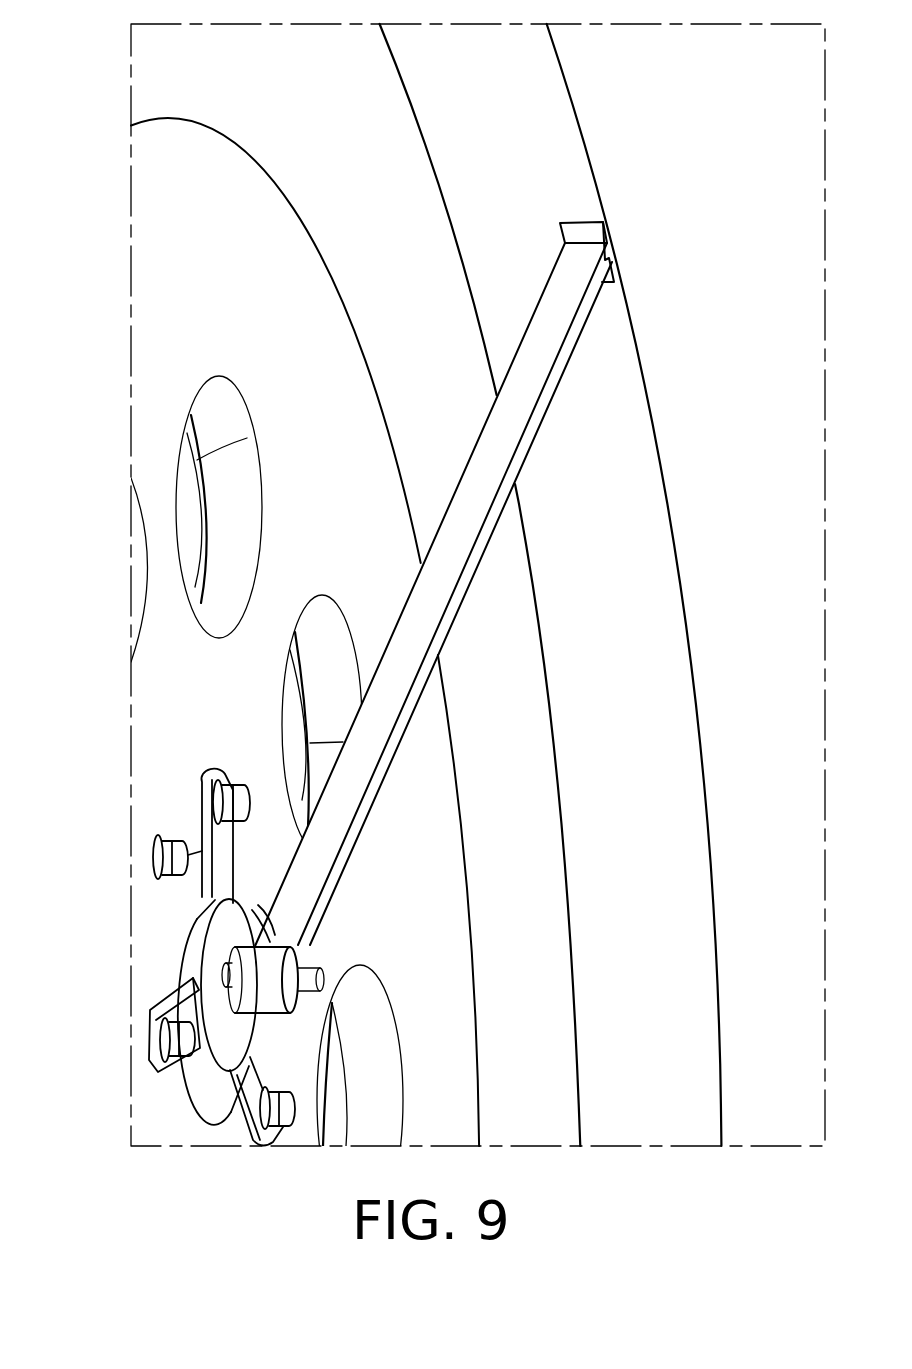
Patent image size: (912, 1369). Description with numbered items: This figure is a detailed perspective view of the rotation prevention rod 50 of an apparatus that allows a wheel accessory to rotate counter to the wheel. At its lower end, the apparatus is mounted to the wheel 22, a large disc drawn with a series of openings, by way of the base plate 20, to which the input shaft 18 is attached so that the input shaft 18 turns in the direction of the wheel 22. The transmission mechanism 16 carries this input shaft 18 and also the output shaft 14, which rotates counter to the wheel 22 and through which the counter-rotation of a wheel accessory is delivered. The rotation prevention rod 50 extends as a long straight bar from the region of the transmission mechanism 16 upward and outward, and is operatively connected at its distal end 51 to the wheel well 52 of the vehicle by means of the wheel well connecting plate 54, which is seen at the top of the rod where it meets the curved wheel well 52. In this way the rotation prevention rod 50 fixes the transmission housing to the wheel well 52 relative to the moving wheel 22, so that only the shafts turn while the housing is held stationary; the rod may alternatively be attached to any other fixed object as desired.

The output shaft 14 is at (308, 998).
The transmission mechanism 16 is at (268, 1020).
The input shaft 18 is at (218, 969).
The base plate 20 is at (173, 1045).
The wheel 22 is at (184, 292).
The rotation prevention rod 50 is at (479, 490).
The distal end 51 is at (556, 262).
The wheel well 52 is at (667, 452).
The wheel well connecting plate 54 is at (612, 233).